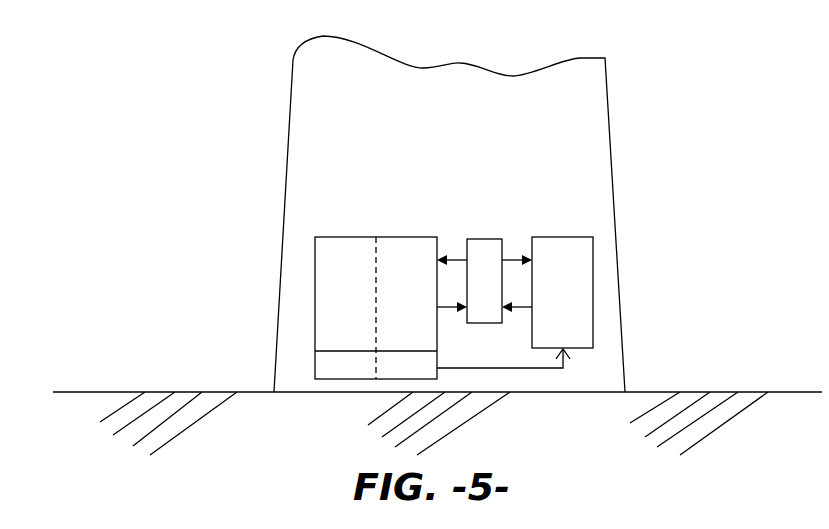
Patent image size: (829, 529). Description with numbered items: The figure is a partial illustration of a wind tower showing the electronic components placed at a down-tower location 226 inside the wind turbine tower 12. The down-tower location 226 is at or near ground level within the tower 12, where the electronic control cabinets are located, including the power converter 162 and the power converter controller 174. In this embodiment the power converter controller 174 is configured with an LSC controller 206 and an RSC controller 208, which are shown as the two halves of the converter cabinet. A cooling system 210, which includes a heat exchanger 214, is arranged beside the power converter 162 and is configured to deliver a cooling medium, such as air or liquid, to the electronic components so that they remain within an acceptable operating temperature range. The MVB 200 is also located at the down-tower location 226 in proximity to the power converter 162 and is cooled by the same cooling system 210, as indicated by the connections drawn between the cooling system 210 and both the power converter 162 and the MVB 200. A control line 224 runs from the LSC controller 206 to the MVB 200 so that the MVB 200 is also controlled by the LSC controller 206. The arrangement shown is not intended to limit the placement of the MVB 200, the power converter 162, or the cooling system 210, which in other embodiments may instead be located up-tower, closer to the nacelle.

The wind turbine tower 12 is at (288, 148).
The power converter 162 is at (377, 237).
The power converter controller 174 is at (292, 369).
The MVB 200 is at (593, 278).
The LSC controller 206 is at (388, 350).
The RSC controller 208 is at (352, 350).
The cooling system 210 is at (488, 222).
The heat exchanger 214 is at (480, 325).
The control line 224 is at (518, 370).
The down-tower location 226 is at (438, 158).